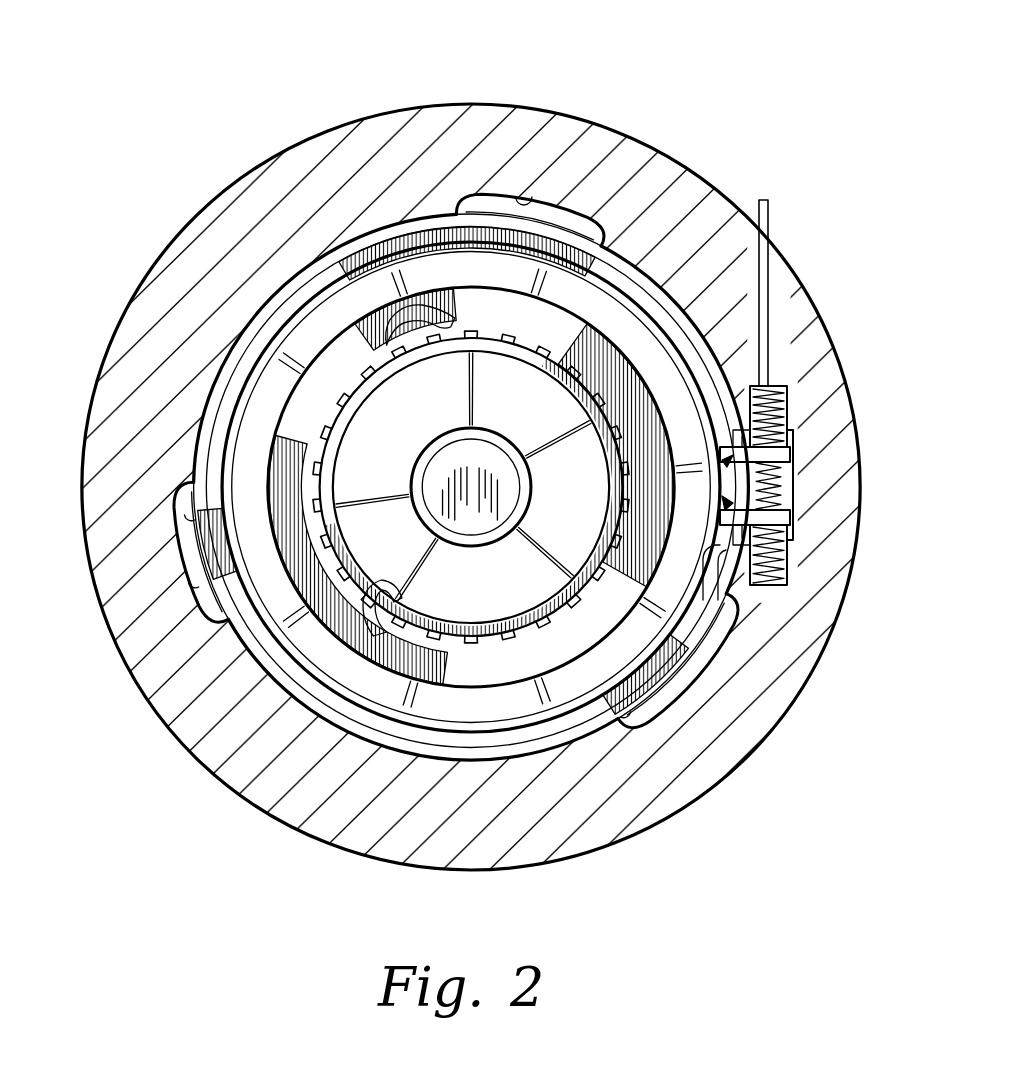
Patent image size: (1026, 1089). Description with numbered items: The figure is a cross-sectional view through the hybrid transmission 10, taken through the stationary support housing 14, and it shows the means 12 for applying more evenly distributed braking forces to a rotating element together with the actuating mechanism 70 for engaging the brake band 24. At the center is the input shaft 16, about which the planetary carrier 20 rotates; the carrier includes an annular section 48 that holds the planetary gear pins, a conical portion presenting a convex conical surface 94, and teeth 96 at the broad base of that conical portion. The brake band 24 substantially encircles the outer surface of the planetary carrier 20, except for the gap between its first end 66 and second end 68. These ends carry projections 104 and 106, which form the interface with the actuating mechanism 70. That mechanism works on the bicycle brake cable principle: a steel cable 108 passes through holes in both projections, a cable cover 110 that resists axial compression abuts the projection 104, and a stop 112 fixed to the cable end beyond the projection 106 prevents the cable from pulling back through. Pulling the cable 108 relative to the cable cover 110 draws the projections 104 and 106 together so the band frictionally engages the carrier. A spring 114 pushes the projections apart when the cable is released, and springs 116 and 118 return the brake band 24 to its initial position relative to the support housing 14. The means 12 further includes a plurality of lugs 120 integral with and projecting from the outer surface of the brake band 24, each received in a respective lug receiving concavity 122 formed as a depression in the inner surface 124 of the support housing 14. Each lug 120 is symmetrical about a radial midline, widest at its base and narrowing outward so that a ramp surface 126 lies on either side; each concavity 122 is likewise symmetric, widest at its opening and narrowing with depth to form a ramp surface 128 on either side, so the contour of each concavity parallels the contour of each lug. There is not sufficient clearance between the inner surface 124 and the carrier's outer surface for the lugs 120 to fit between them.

The hybrid transmission 10 is at (218, 82).
The means for applying more evenly distributed braking forces 12 is at (628, 214).
The support housing 14 is at (665, 805).
The input shaft 16 is at (485, 445).
The planetary carrier 20 is at (620, 326).
The brake band 24 is at (292, 300).
The annular section 48 is at (471, 502).
The first end 66 is at (722, 452).
The second end 68 is at (722, 503).
The actuating mechanism 70 is at (810, 440).
The convex conical surface 94 is at (471, 487).
The teeth 96 is at (388, 342).
The projection 104 is at (790, 410).
The projection 106 is at (790, 520).
The steel cable 108 is at (795, 465).
The cable cover 110 is at (770, 205).
The stop 112 is at (785, 578).
The spring 114 is at (806, 428).
The spring 116 is at (795, 595).
The spring 118 is at (785, 385).
The lug 120 is at (528, 212).
The lug receiving concavity 122 is at (496, 205).
The inner surface 124 is at (390, 733).
The ramp surface 126 is at (458, 240).
The ramp surface 128 is at (487, 207).